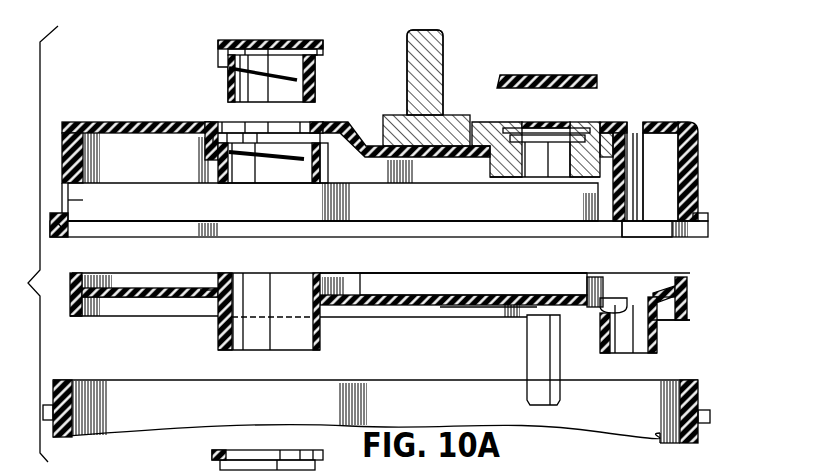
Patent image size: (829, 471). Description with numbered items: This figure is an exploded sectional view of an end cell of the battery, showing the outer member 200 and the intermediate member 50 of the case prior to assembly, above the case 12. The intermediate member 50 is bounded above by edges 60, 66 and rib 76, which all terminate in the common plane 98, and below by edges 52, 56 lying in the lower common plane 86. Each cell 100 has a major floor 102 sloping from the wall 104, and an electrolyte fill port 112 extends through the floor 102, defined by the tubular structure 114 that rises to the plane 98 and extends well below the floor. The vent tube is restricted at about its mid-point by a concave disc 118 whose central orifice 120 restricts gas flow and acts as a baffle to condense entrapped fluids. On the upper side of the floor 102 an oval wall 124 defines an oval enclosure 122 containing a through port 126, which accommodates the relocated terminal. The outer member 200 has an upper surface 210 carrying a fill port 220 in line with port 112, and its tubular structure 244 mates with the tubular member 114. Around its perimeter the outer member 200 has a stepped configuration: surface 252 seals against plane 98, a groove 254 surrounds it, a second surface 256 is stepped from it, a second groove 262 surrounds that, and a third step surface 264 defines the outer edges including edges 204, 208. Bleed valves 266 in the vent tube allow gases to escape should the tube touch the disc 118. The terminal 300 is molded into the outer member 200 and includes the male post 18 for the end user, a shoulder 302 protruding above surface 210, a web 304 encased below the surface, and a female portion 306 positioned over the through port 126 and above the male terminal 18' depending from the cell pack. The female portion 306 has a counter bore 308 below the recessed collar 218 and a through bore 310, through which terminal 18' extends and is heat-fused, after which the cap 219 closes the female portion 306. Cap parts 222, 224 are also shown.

The case 12 is at (580, 432).
The male post 18 is at (438, 72).
The male terminal 18' is at (558, 360).
The intermediate member 50 is at (691, 306).
The edge 52 is at (73, 311).
The edge 56 is at (688, 318).
The edge 60 is at (73, 275).
The edge 66 is at (683, 278).
The rib 76 is at (427, 273).
The common plane 86 is at (76, 323).
The common plane 98 is at (80, 274).
The cell 100 is at (469, 289).
The major floor 102 is at (163, 290).
The wall 104 is at (100, 277).
The electrolyte fill port 112 is at (297, 290).
The tubular structure 114 is at (350, 276).
The concave disc 118 is at (652, 340).
The orifice 120 is at (640, 292).
The oval enclosure 122 is at (583, 277).
The oval wall 124 is at (600, 292).
The through port 126 is at (537, 297).
The outer member 200 is at (702, 125).
The edge 204 is at (708, 229).
The edge 208 is at (50, 226).
The surface 210 is at (637, 123).
The recessed collar 218 is at (583, 122).
The cap 219 is at (562, 75).
The fill port 220 is at (313, 122).
The cap 222 is at (300, 43).
The top plate 224 is at (277, 43).
The tubular structure 244 is at (322, 155).
The surface 252 is at (73, 183).
The groove 254 is at (73, 188).
The second surface 256 is at (70, 223).
The second groove 262 is at (57, 231).
The third step surface 264 is at (643, 175).
The bleed valves 266 is at (647, 239).
The terminal 300 is at (458, 81).
The shoulder 302 is at (450, 126).
The web 304 is at (484, 123).
The female portion 306 is at (520, 182).
The counter bore 308 is at (540, 127).
The through bore 310 is at (553, 182).